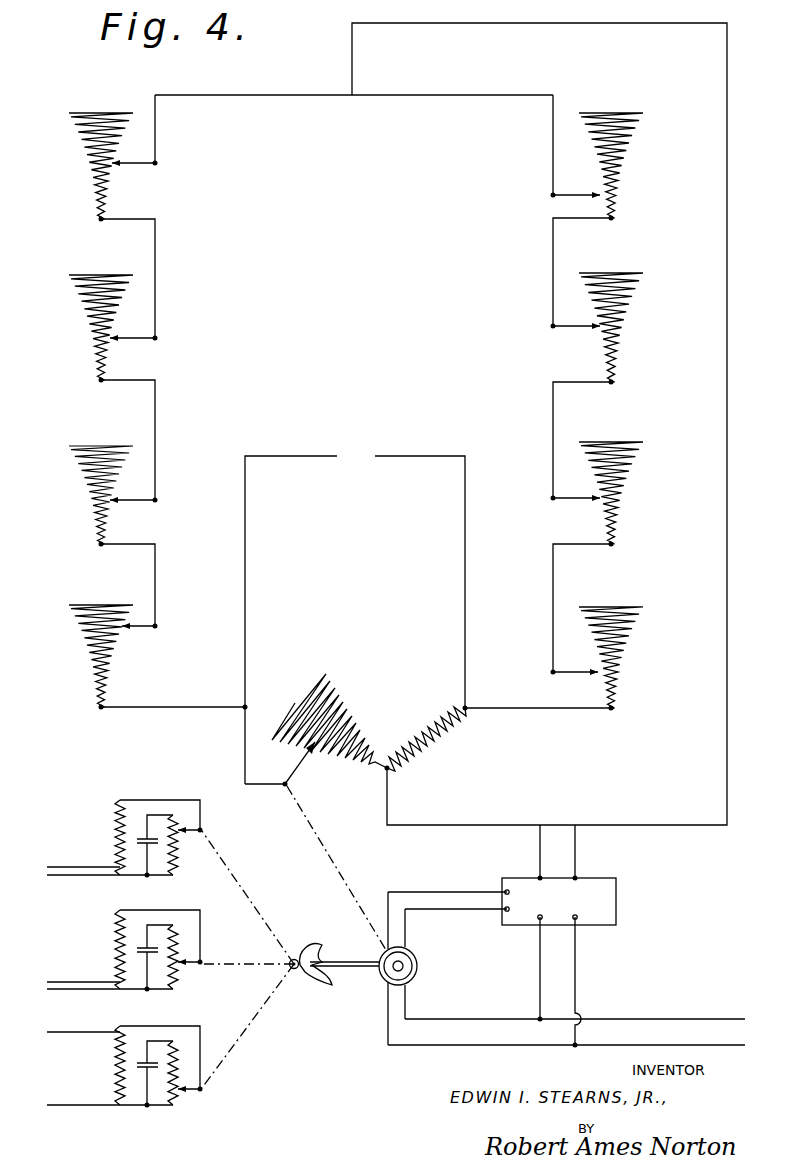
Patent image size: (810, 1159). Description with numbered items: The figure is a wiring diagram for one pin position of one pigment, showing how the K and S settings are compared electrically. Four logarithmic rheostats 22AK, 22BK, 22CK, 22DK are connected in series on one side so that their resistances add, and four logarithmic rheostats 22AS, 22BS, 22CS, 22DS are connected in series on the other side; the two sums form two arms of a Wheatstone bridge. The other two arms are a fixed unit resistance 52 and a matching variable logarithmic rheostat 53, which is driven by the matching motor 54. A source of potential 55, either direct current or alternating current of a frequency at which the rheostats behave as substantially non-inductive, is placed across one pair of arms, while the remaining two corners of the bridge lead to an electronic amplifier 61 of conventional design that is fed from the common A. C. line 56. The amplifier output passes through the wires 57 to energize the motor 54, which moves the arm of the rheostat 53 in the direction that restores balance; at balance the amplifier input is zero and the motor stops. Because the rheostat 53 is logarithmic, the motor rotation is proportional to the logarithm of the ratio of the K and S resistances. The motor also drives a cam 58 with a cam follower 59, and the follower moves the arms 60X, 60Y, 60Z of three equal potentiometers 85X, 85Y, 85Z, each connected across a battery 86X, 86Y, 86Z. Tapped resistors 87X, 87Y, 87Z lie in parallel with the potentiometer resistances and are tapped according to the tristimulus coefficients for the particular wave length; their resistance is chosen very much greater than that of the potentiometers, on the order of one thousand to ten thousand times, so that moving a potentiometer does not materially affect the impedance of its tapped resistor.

The logarithmic rheostat 22AK is at (106, 118).
The logarithmic rheostat 22BK is at (106, 280).
The logarithmic rheostat 22CK is at (98, 448).
The logarithmic rheostat 22DK is at (95, 607).
The logarithmic rheostat 22AS is at (672, 103).
The logarithmic rheostat 22BS is at (675, 265).
The logarithmic rheostat 22CS is at (675, 428).
The logarithmic rheostat 22DS is at (628, 626).
The source of potential 55 is at (375, 456).
The variable logarithmic rheostat 53 is at (327, 690).
The fixed unit resistance 52 is at (430, 745).
The matching motor 54 is at (417, 975).
The A. C. line 56 is at (657, 1018).
The wires 57 is at (460, 895).
The cam 58 is at (318, 975).
The cam follower 59 is at (294, 969).
The electronic amplifier 61 is at (618, 900).
The potentiometer arm 60X is at (204, 830).
The potentiometer arm 60Y is at (203, 962).
The potentiometer arm 60Z is at (202, 1092).
The potentiometer 85X is at (180, 858).
The potentiometer 85Y is at (180, 978).
The potentiometer 85Z is at (178, 1105).
The battery 86X is at (148, 840).
The battery 86Y is at (148, 950).
The battery 86Z is at (148, 1068).
The tapped resistor 87X is at (118, 852).
The tapped resistor 87Y is at (118, 962).
The tapped resistor 87Z is at (118, 1090).